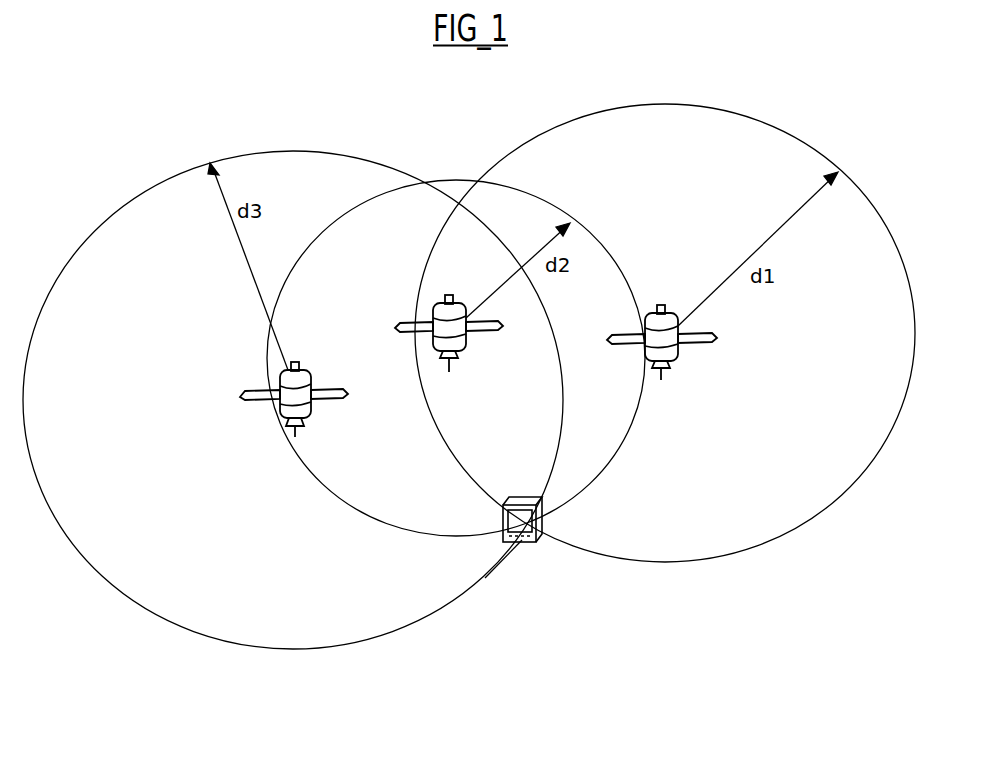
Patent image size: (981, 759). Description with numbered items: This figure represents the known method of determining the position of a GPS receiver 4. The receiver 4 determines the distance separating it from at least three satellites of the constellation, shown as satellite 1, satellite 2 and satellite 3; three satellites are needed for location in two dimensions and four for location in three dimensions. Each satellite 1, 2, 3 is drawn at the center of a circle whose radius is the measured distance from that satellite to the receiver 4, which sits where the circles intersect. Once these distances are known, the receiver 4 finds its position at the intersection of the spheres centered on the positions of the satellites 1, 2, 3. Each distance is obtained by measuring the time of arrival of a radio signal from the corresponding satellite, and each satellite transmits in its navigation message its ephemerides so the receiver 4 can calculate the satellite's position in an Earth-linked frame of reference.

The satellite 1 is at (680, 353).
The satellite 2 is at (466, 341).
The satellite 3 is at (312, 410).
The receiver 4 is at (524, 497).